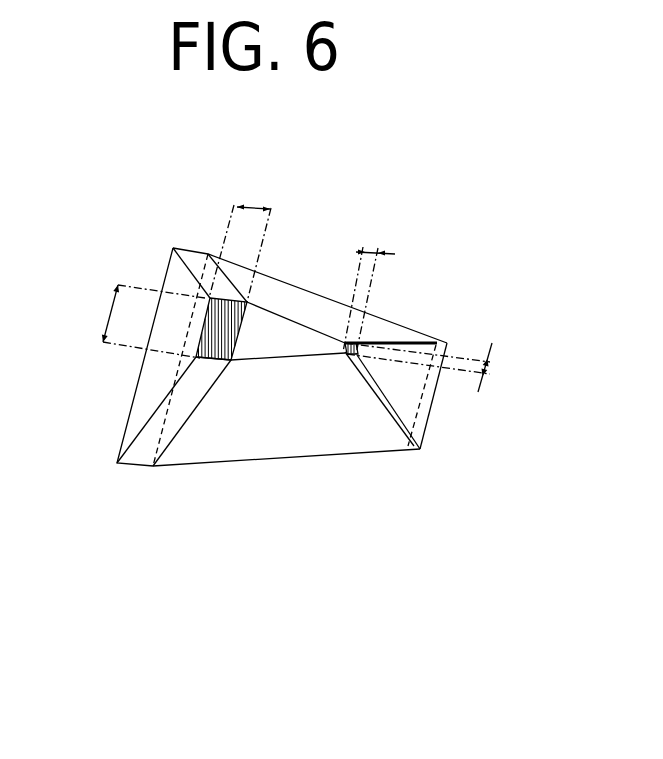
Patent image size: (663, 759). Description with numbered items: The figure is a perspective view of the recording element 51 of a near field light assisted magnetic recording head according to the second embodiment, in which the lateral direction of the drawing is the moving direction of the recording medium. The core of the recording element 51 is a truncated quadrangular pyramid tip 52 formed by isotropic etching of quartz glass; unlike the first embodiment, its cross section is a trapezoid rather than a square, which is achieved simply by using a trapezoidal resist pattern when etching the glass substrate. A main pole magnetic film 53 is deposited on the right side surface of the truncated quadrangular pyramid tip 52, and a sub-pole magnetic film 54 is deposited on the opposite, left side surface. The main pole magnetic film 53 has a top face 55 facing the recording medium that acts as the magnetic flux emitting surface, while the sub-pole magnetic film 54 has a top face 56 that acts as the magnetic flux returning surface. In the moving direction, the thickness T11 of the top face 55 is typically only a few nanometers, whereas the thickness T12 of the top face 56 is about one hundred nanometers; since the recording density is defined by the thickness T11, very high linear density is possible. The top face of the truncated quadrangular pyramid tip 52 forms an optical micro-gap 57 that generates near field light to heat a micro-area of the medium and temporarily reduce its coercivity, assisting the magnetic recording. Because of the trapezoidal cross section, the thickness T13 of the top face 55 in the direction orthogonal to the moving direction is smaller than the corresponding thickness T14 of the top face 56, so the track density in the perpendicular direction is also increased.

The recording element 51 is at (117, 148).
The truncated quadrangular pyramid tip 52 is at (290, 435).
The main pole magnetic film 53 is at (402, 427).
The sub-pole magnetic film 54 is at (118, 465).
The top face 55 is at (347, 345).
The top face 56 is at (215, 322).
The optical micro-gap 57 is at (285, 330).
The thickness T11 is at (376, 282).
The thickness T12 is at (248, 233).
The thickness T13 is at (448, 369).
The thickness T14 is at (126, 321).